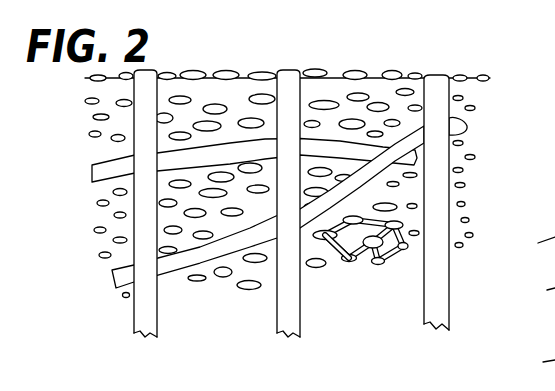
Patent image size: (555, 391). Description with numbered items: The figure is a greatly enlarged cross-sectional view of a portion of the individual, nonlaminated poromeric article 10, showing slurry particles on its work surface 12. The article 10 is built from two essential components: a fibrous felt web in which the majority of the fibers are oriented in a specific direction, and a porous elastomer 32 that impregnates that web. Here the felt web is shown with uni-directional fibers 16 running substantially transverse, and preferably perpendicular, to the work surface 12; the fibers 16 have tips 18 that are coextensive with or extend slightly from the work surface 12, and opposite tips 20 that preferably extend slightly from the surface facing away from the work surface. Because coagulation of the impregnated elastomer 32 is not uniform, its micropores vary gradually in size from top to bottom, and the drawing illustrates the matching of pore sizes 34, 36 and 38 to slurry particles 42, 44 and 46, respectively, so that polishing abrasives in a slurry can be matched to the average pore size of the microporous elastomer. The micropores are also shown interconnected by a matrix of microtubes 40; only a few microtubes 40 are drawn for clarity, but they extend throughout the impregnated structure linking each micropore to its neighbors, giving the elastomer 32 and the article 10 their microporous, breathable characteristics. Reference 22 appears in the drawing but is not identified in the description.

The poromeric article 10 is at (532, 244).
The work surface 12 is at (248, 71).
The uni-directional fibers 16 is at (276, 320).
The fiber tips 18 is at (152, 69).
The fiber tips 20 is at (531, 363).
The intermediate layer 22 is at (535, 293).
The porous elastomer 32 is at (168, 305).
The pore size 34 is at (313, 237).
The pore size 36 is at (406, 250).
The pore size 38 is at (472, 158).
The microtubes 40 is at (372, 263).
The slurry particles 42 is at (363, 72).
The slurry particles 44 is at (432, 76).
The slurry particles 46 is at (483, 77).